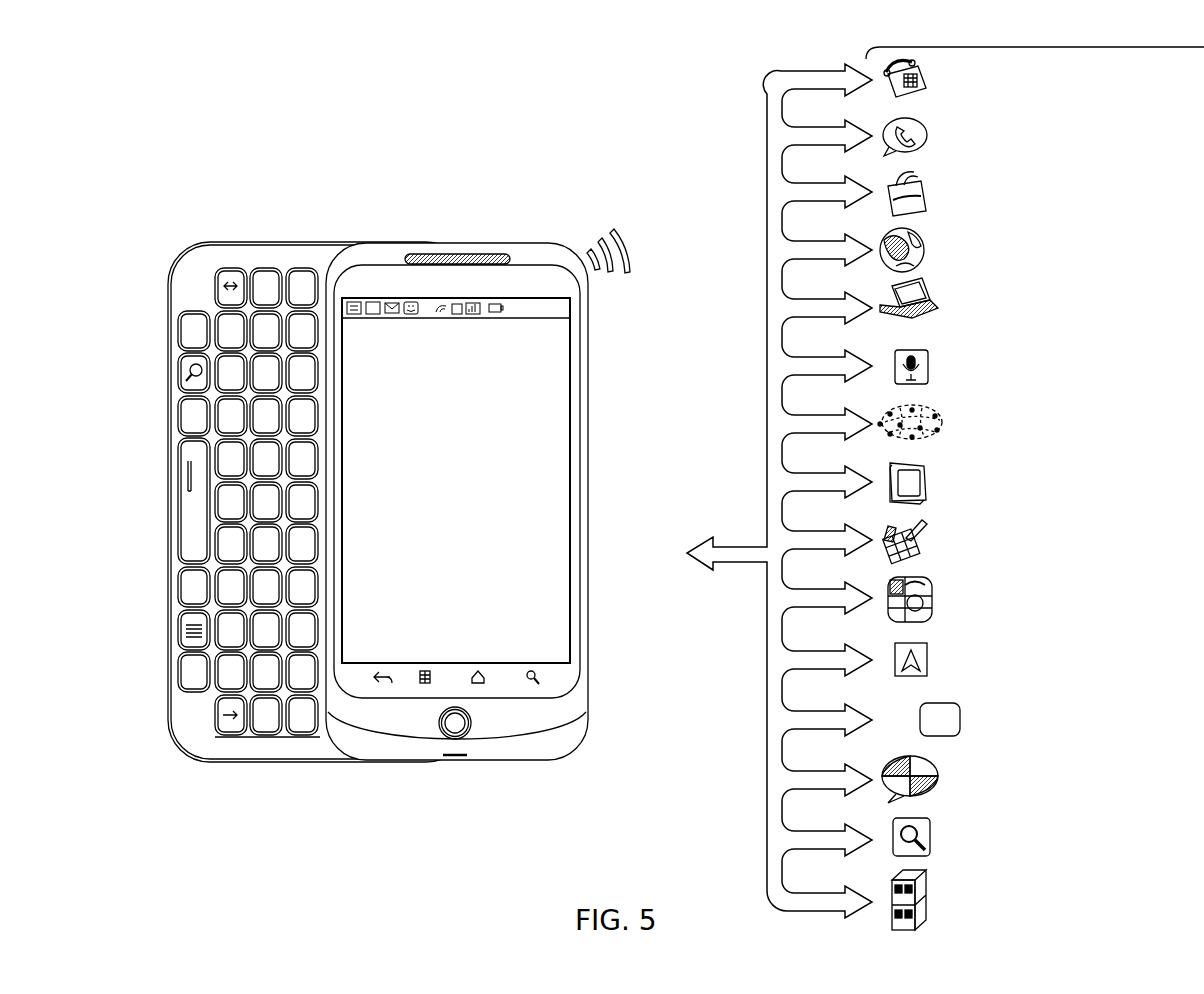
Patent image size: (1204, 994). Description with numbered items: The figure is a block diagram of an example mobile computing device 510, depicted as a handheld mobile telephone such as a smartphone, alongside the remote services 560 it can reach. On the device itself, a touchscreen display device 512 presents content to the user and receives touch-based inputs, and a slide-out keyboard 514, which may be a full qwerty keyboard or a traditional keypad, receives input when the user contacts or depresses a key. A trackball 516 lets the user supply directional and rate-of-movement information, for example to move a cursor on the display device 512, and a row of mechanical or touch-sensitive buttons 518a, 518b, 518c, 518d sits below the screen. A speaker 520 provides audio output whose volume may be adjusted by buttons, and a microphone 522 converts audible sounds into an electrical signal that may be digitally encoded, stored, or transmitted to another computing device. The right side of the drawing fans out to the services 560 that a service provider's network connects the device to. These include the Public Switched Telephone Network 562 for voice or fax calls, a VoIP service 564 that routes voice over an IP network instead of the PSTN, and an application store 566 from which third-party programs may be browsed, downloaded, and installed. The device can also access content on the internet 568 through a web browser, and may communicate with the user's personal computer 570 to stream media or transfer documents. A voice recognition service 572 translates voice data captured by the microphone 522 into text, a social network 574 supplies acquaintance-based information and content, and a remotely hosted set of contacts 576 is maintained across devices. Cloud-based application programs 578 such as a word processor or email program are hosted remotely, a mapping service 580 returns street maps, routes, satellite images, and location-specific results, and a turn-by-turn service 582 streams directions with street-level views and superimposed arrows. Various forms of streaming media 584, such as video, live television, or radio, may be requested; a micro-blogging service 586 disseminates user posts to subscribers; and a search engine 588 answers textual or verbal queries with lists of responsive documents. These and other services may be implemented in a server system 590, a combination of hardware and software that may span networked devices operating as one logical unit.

The mobile computing device 510 is at (524, 172).
The touchscreen display device 512 is at (574, 492).
The keyboard 514 is at (293, 242).
The trackball 516 is at (472, 724).
The button 518a is at (382, 670).
The button 518b is at (426, 670).
The button 518c is at (478, 670).
The button 518d is at (533, 670).
The speaker 520 is at (462, 254).
The microphone 522 is at (455, 762).
The services 560 is at (1040, 47).
The Public Switched Telephone Network (PSTN) 562 is at (926, 84).
The Voice over Internet Protocol (VoIP) service 564 is at (926, 134).
The application store 566 is at (926, 190).
The internet 568 is at (925, 252).
The personal computer 570 is at (932, 298).
The voice recognition service 572 is at (930, 365).
The social network 574 is at (940, 412).
The contacts 576 is at (928, 480).
The cloud-based application programs 578 is at (930, 540).
The mapping service 580 is at (932, 590).
The turn-by-turn service 582 is at (927, 656).
The streaming media 584 is at (960, 715).
The micro-blogging service 586 is at (938, 776).
The search engine 588 is at (930, 837).
The server system 590 is at (928, 896).